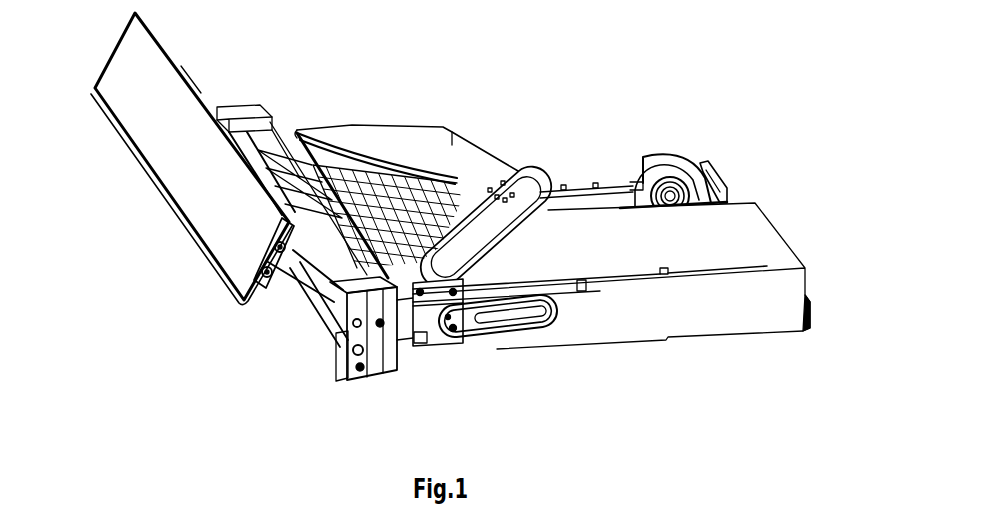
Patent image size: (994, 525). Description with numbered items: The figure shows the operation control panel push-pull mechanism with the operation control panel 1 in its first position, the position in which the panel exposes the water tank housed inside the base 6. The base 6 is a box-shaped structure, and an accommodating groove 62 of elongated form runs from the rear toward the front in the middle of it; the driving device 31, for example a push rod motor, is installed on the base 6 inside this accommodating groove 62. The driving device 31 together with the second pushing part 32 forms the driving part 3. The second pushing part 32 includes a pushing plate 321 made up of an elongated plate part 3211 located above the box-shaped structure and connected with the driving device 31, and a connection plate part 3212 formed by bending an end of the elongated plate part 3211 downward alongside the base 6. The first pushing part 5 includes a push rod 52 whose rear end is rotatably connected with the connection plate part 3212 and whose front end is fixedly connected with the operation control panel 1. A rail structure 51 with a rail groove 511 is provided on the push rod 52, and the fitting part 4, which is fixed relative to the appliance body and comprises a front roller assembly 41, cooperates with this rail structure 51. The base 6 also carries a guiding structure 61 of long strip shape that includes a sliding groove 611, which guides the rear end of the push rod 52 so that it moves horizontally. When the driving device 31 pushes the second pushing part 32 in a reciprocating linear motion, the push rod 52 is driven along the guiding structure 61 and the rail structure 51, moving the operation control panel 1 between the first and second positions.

The operation control panel 1 is at (173, 145).
The driving part 3 is at (634, 141).
The driving device 31 is at (655, 175).
The second pushing part 32 is at (409, 151).
The pushing plate 321 is at (423, 206).
The elongated plate part 3211 is at (476, 177).
The connection plate part 3212 is at (427, 308).
The fitting part 4 is at (303, 365).
The front roller assembly 41 is at (340, 343).
The first pushing part 5 is at (217, 224).
The rail structure 51 is at (302, 196).
The rail groove 511 is at (357, 277).
The push rod 52 is at (310, 306).
The base 6 is at (611, 259).
The guiding structure 61 is at (580, 357).
The sliding groove 611 is at (533, 337).
The accommodating groove 62 is at (700, 170).